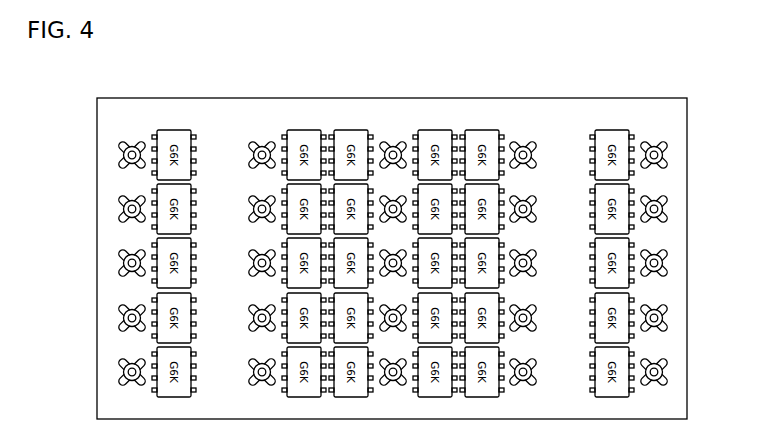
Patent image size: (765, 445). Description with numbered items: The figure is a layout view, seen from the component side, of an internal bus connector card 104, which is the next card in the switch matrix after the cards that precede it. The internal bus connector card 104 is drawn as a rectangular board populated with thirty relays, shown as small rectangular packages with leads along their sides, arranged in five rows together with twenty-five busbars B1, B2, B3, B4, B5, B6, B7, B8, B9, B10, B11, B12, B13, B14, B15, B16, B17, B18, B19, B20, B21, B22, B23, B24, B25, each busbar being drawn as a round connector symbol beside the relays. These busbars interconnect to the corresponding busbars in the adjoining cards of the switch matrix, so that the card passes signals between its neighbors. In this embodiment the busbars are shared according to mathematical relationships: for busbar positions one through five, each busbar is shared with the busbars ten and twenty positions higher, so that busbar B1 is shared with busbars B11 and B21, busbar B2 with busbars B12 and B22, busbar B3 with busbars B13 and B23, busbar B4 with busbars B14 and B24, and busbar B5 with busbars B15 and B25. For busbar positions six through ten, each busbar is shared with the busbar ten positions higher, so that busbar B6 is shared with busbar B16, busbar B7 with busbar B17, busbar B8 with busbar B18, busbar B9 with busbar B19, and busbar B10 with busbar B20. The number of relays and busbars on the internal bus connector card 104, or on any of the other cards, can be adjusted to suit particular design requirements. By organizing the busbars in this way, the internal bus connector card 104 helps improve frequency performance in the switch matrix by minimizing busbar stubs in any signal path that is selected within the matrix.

The internal bus connector card 104 is at (518, 98).
The busbar B1 is at (132, 158).
The busbar B2 is at (132, 212).
The busbar B3 is at (132, 266).
The busbar B4 is at (132, 321).
The busbar B5 is at (132, 375).
The busbar B6 is at (262, 375).
The busbar B7 is at (262, 321).
The busbar B8 is at (262, 266).
The busbar B9 is at (262, 212).
The busbar B10 is at (262, 158).
The busbar B11 is at (393, 158).
The busbar B12 is at (393, 212).
The busbar B13 is at (393, 266).
The busbar B14 is at (393, 321).
The busbar B15 is at (393, 375).
The busbar B16 is at (523, 375).
The busbar B17 is at (523, 321).
The busbar B18 is at (523, 266).
The busbar B19 is at (523, 212).
The busbar B20 is at (523, 158).
The busbar B21 is at (654, 158).
The busbar B22 is at (654, 212).
The busbar B23 is at (654, 266).
The busbar B24 is at (654, 321).
The busbar B25 is at (654, 375).